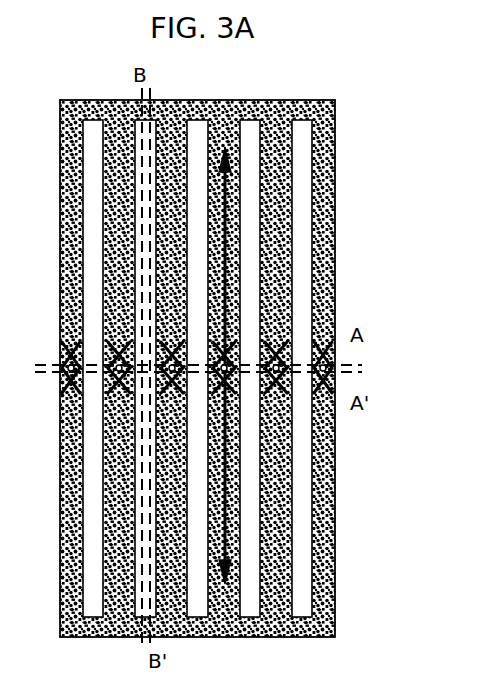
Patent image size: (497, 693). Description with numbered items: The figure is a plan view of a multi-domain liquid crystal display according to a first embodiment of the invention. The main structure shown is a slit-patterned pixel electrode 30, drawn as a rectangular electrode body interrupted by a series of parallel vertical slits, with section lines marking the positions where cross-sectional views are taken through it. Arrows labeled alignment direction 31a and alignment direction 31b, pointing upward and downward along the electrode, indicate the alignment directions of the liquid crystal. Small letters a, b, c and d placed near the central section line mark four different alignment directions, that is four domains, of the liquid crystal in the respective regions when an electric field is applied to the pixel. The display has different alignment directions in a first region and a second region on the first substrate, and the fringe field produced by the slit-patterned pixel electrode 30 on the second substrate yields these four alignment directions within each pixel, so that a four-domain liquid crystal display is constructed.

The slit-patterned pixel electrode 30 is at (283, 257).
The alignment direction 31a is at (229, 197).
The alignment direction 31b is at (229, 540).